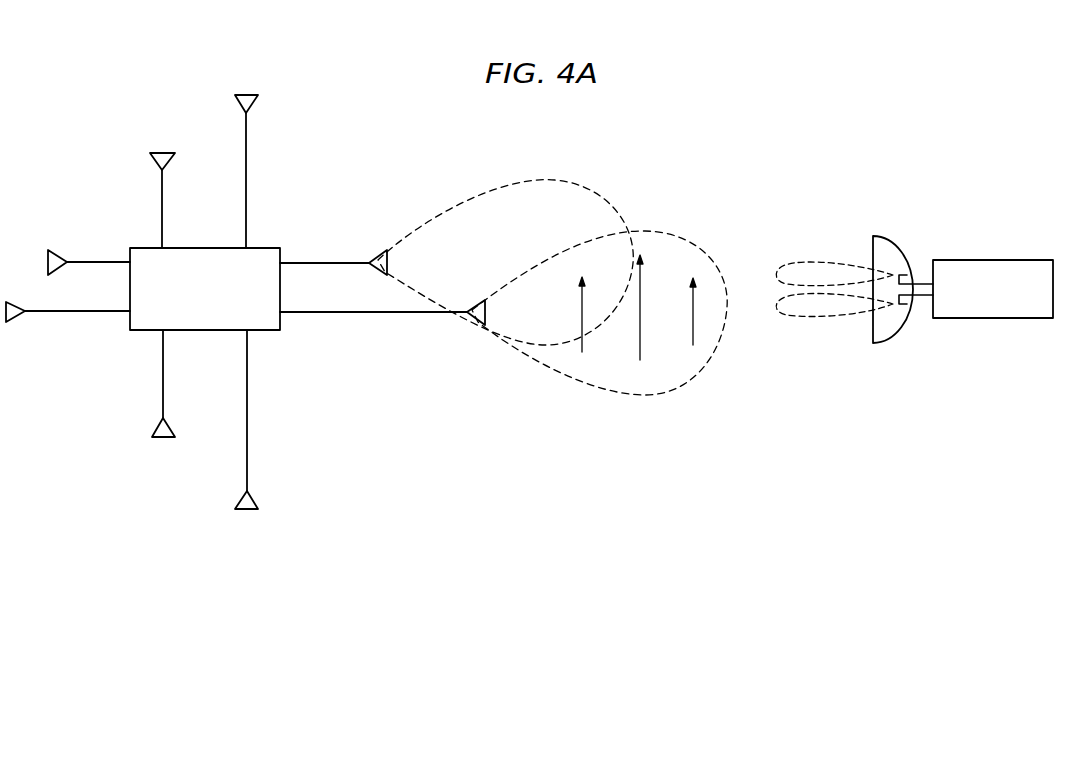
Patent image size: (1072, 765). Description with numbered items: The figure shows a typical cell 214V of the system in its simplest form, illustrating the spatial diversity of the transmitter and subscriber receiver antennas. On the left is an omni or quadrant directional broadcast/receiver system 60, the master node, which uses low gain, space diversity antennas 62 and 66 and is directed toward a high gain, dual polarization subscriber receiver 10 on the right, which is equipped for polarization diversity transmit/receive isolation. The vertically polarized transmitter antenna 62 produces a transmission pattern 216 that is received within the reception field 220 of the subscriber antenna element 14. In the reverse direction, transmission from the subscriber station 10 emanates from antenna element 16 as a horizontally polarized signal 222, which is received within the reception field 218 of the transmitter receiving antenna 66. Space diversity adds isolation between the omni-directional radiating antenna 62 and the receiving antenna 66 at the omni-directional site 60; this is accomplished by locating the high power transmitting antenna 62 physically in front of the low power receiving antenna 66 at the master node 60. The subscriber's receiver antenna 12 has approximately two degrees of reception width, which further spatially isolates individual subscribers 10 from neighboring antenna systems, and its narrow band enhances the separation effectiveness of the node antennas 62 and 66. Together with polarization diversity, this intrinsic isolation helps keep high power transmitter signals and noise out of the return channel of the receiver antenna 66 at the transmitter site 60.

The dual polarization subscriber receiver 10 is at (986, 207).
The receiver antenna 12 is at (888, 240).
The subscriber antenna element 14 is at (903, 272).
The antenna element 16 is at (903, 306).
The omni or quadrant directional broadcast/receiver system 60 is at (311, 168).
The vertically polarized transmitter antenna 62 is at (244, 95).
The transmitter receiving antenna 66 is at (160, 153).
The cell 214V is at (694, 123).
The transmission pattern 216 is at (664, 231).
The reception field 218 is at (486, 192).
The reception field 220 is at (779, 270).
The horizontally polarized signal 222 is at (779, 306).